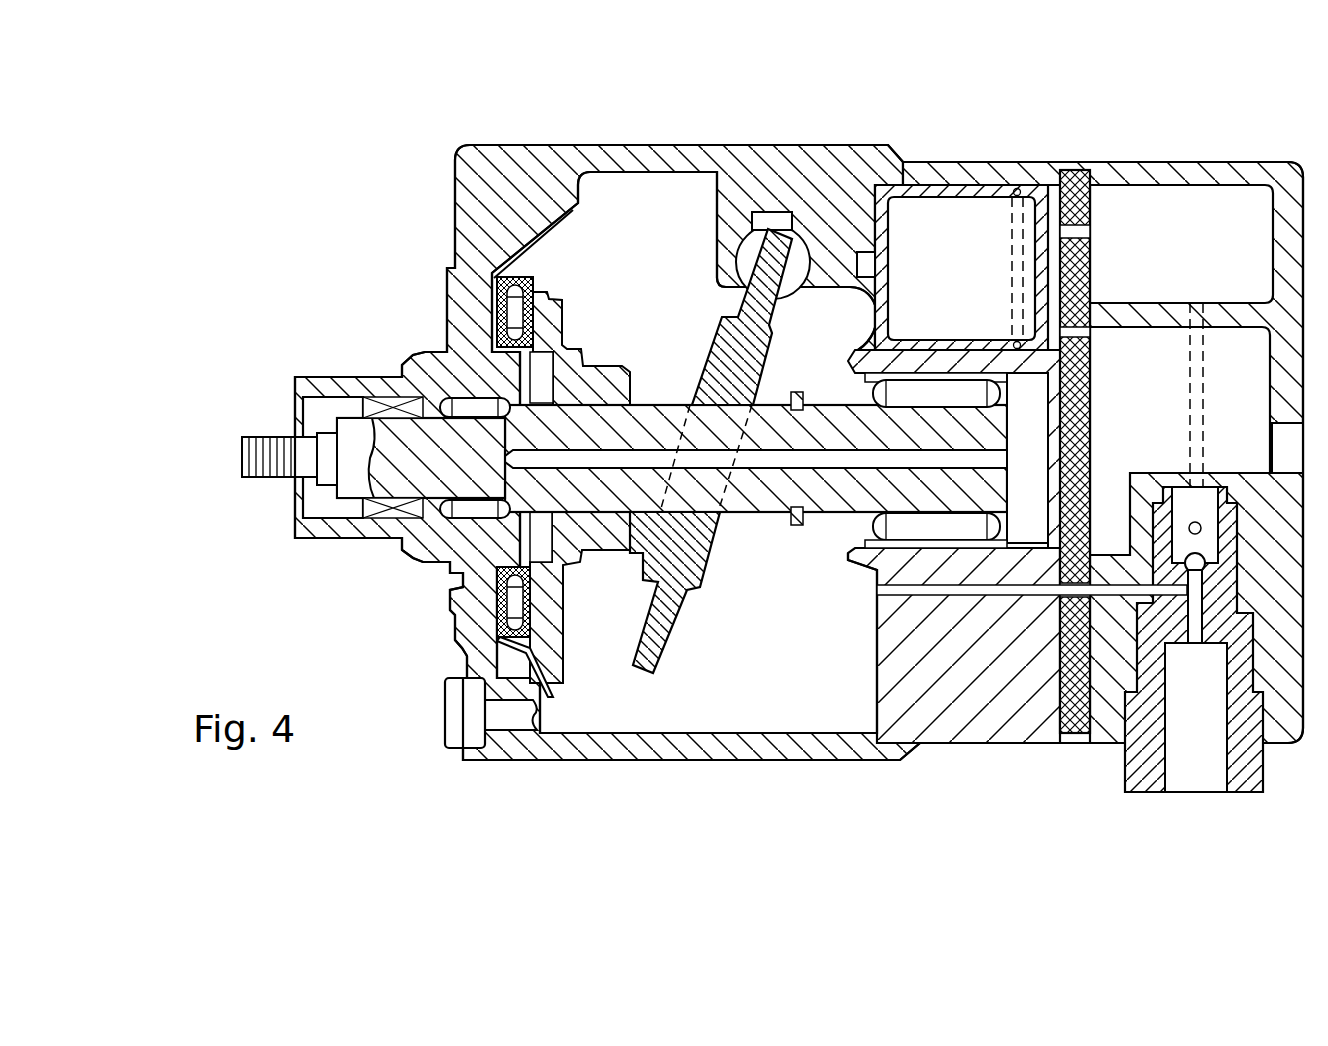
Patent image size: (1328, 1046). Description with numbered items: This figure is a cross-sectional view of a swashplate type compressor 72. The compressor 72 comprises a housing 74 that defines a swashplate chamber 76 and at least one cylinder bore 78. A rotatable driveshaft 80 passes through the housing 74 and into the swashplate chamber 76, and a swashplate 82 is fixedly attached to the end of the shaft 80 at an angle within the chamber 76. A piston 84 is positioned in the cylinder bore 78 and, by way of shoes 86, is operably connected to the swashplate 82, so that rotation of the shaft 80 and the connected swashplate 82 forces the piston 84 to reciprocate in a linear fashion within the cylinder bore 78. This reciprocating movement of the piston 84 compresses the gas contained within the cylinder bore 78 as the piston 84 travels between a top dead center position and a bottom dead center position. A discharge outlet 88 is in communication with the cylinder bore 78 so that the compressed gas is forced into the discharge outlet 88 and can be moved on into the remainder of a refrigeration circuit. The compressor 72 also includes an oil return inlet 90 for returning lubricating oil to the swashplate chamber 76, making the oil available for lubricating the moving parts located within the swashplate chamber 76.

The swashplate type compressor 72 is at (681, 76).
The housing 74 is at (637, 748).
The swashplate chamber 76 is at (742, 667).
The cylinder bore 78 is at (1000, 195).
The rotatable driveshaft 80 is at (260, 467).
The swashplate 82 is at (652, 668).
The piston 84 is at (910, 193).
The shoes 86 is at (747, 248).
The discharge outlet 88 is at (1090, 227).
The oil return inlet 90 is at (463, 720).